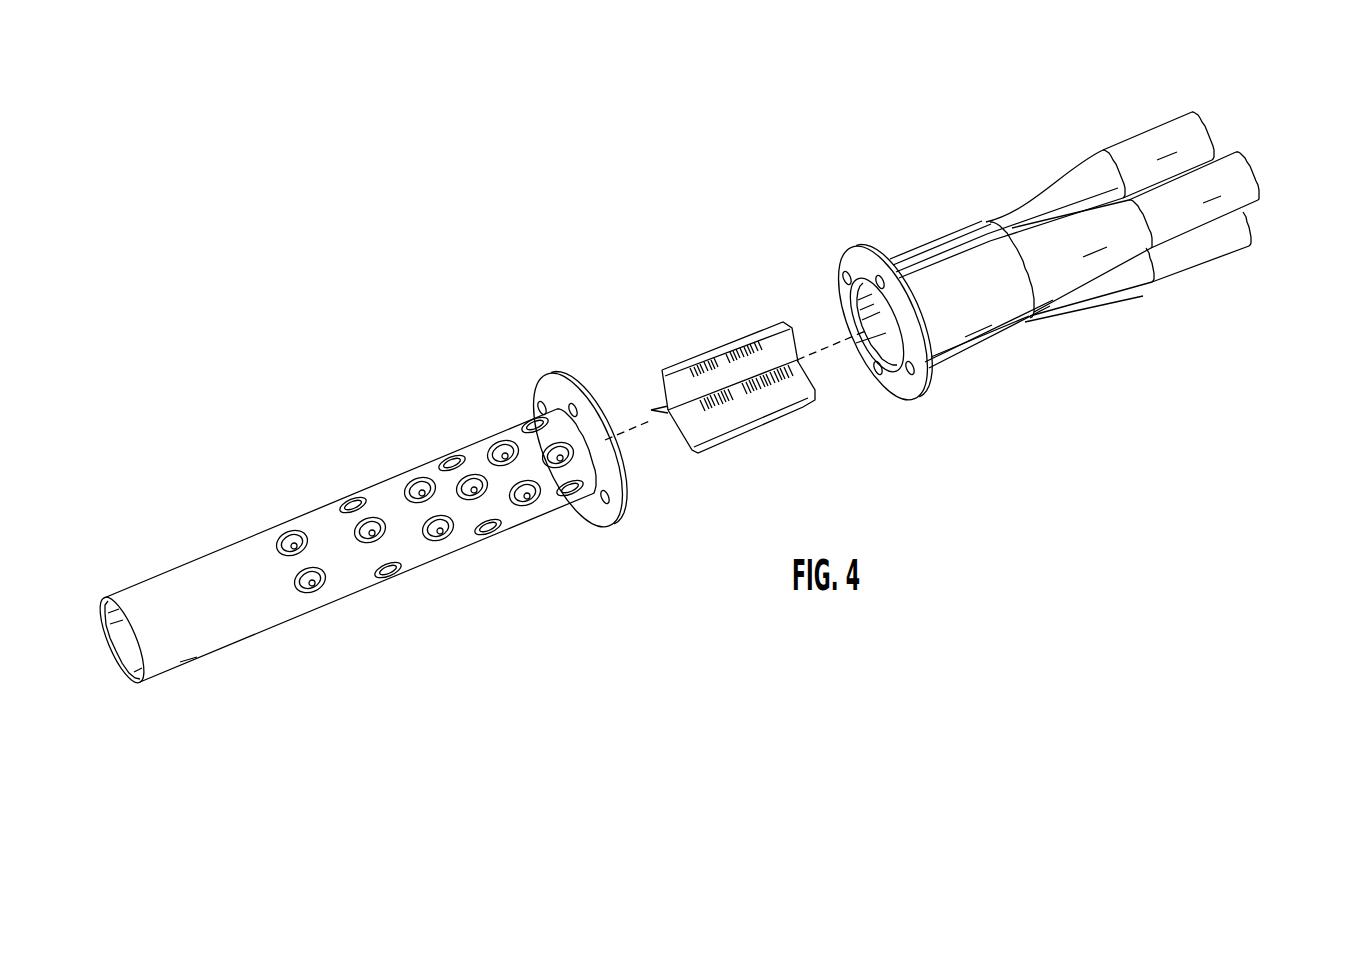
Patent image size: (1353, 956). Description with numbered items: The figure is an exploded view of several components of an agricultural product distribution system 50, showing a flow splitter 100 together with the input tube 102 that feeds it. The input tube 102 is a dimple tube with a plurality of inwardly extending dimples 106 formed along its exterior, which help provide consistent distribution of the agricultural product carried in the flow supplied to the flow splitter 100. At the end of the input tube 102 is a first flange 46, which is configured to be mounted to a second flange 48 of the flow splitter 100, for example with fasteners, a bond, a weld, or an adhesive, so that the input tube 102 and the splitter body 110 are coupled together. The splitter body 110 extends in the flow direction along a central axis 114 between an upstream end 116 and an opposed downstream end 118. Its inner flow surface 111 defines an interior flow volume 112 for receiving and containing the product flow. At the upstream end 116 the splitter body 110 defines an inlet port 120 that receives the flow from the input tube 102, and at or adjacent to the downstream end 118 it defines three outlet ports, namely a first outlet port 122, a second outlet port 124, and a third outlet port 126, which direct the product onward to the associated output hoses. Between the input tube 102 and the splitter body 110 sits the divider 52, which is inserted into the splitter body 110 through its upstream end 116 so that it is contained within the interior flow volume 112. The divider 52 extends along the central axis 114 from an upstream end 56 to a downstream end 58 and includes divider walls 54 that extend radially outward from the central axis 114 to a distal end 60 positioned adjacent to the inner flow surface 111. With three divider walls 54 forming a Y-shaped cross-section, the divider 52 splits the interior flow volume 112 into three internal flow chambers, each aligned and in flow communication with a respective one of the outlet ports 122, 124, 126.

The first flange 46 is at (557, 390).
The second flange 48 is at (900, 402).
The agricultural product distribution system 50 is at (455, 268).
The divider 52 is at (711, 490).
The divider walls 54 is at (727, 424).
The upstream end 56 is at (645, 377).
The downstream end 58 is at (788, 312).
The distal end 60 is at (803, 408).
The flow splitter 100 is at (996, 408).
The input tube 102 is at (222, 545).
The dimples 106 is at (410, 482).
The splitter body 110 is at (988, 337).
The inner flow surface 111 is at (888, 340).
The interior flow volume 112 is at (822, 304).
The central axis 114 is at (630, 431).
The upstream end 116 is at (840, 230).
The downstream end 118 is at (1180, 76).
The inlet port 120 is at (838, 405).
The first outlet port 122 is at (1225, 120).
The second outlet port 124 is at (1280, 167).
The third outlet port 126 is at (1270, 223).